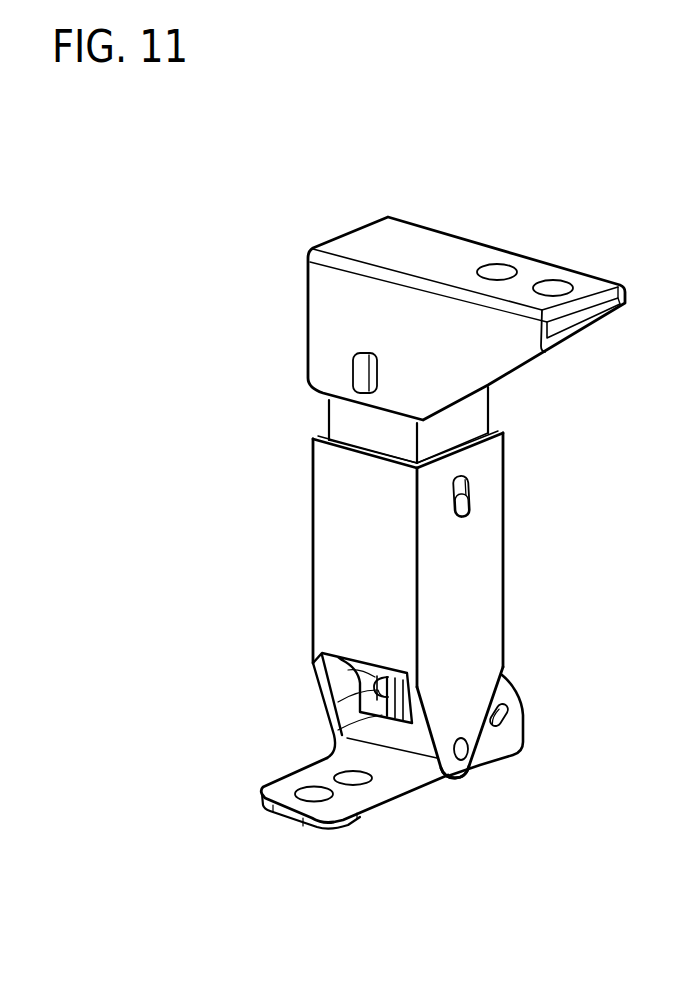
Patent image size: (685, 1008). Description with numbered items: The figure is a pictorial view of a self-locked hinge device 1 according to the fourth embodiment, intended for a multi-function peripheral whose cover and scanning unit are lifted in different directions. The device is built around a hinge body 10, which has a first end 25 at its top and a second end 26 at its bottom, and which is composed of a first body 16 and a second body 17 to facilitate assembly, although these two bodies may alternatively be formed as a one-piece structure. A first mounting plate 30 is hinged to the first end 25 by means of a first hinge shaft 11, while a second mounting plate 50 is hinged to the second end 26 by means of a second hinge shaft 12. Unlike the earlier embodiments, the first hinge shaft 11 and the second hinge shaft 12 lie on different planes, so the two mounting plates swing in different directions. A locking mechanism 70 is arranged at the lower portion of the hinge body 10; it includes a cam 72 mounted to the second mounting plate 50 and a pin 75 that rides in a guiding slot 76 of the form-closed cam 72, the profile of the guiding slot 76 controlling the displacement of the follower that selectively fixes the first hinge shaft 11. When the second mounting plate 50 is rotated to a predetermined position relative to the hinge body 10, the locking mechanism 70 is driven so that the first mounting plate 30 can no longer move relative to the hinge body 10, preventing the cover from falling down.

The self-locked hinge device 1 is at (411, 166).
The first mounting plate 30 is at (358, 235).
The first hinge shaft 11 is at (355, 377).
The first end 25 is at (330, 402).
The hinge body 10 is at (183, 487).
The first body 16 is at (328, 426).
The second body 17 is at (323, 567).
The locking mechanism 70 is at (340, 735).
The pin 75 is at (384, 718).
The cam 72 is at (497, 700).
The guiding slot 76 is at (507, 716).
The second hinge shaft 12 is at (468, 749).
The second end 26 is at (462, 778).
The second mounting plate 50 is at (377, 805).